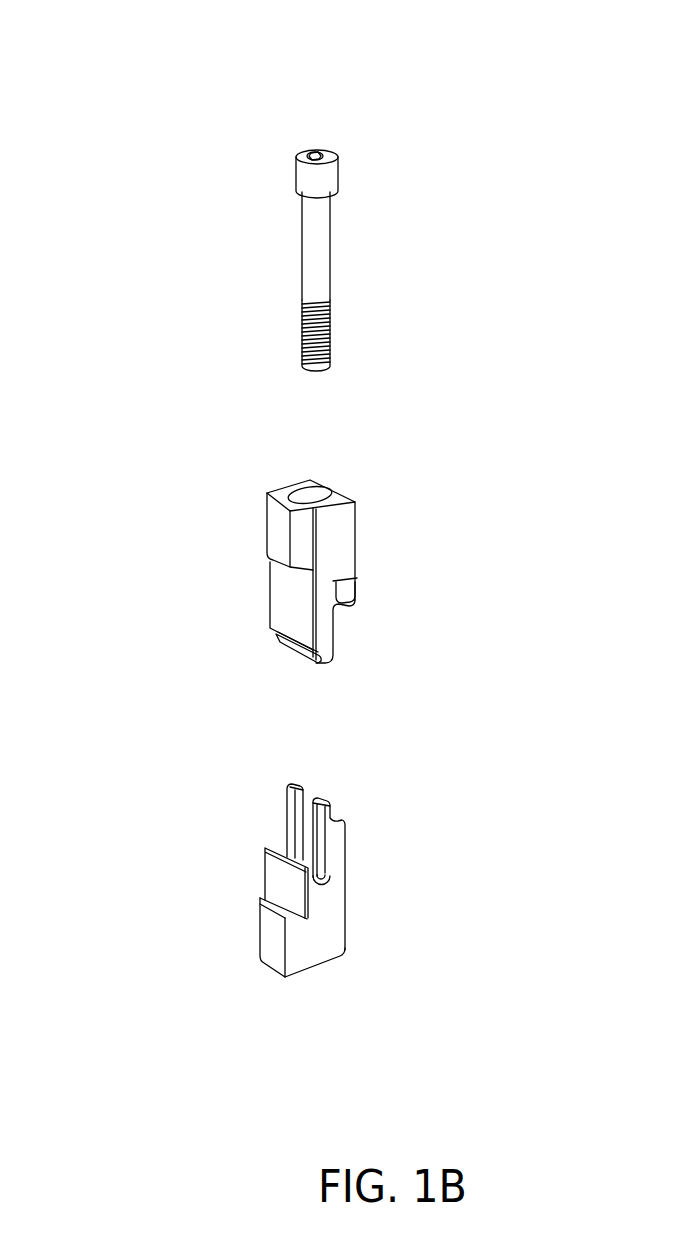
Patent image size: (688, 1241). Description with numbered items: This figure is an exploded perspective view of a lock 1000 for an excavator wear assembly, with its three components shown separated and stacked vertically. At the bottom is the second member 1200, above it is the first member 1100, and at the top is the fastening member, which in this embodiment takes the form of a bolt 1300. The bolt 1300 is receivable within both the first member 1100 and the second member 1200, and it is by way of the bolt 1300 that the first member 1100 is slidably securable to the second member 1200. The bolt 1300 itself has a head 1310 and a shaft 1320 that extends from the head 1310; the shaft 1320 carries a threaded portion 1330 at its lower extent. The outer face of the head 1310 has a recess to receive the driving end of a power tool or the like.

The lock 1000 is at (226, 577).
The first member 1100 is at (380, 537).
The second member 1200 is at (409, 845).
The bolt 1300 is at (284, 227).
The head 1310 is at (303, 177).
The shaft 1320 is at (318, 257).
The threaded portion 1330 is at (300, 332).